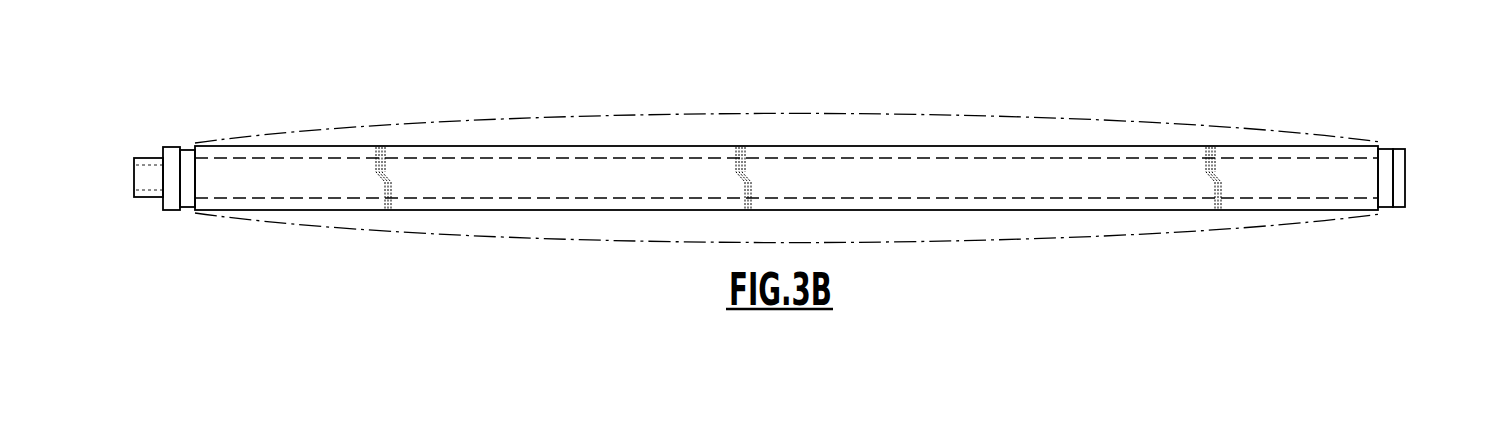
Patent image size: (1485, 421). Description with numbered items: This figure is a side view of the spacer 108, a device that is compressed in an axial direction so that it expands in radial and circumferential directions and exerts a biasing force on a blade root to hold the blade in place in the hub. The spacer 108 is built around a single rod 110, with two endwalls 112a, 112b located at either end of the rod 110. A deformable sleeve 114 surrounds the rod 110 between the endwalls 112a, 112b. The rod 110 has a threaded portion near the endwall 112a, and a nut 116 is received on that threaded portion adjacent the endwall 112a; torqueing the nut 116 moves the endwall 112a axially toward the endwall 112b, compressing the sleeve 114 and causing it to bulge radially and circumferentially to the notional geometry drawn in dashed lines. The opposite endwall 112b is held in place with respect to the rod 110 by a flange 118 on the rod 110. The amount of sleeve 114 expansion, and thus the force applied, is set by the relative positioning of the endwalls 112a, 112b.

The spacer 108 is at (579, 68).
The rod 110 is at (1257, 172).
The endwall 112a is at (187, 198).
The endwall 112b is at (1386, 200).
The deformable sleeve 114 is at (1128, 148).
The nut 116 is at (172, 152).
The flange 118 is at (1399, 150).